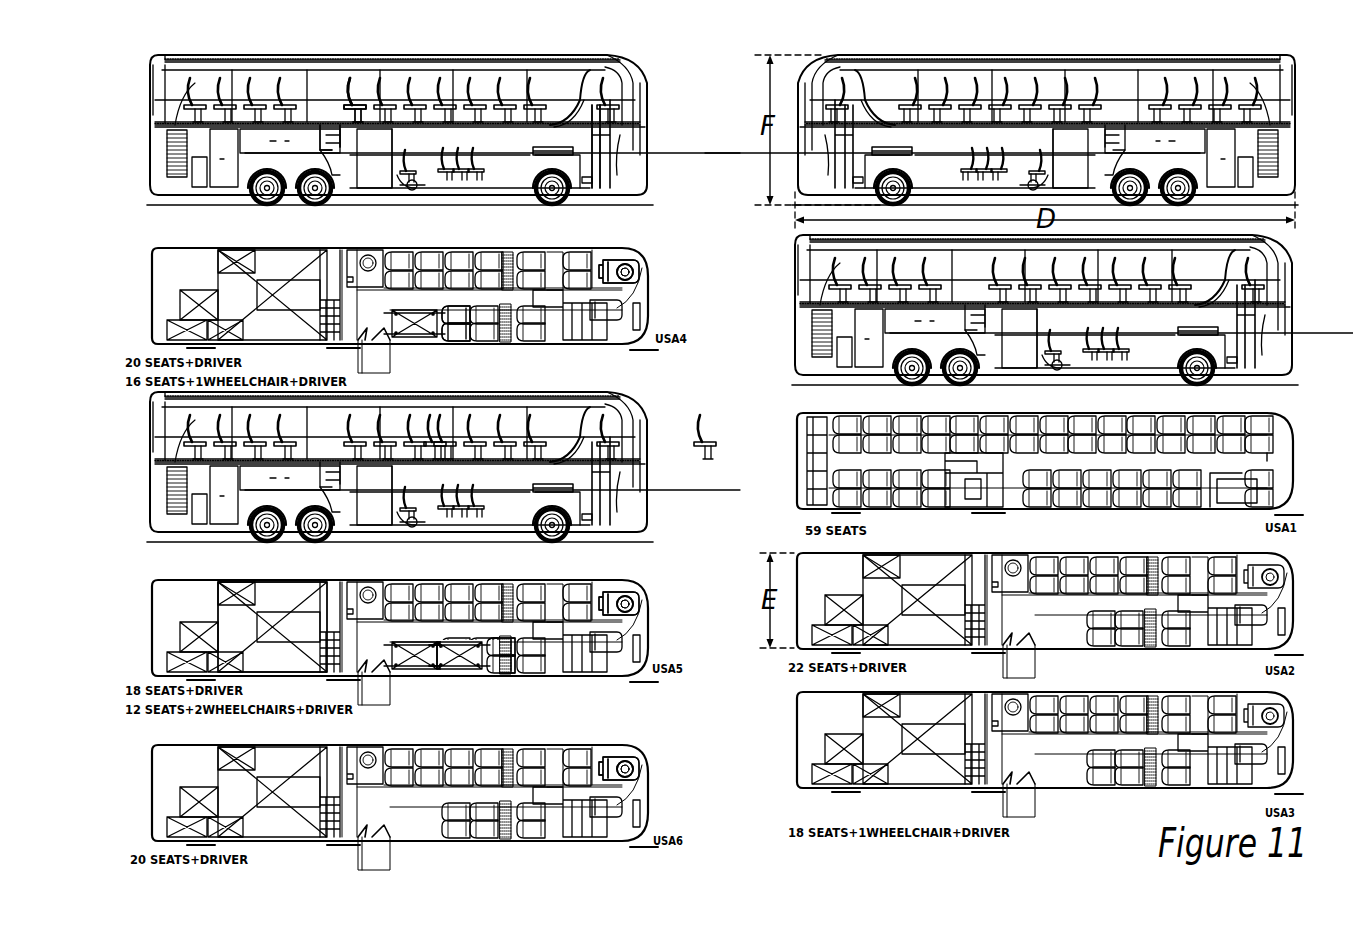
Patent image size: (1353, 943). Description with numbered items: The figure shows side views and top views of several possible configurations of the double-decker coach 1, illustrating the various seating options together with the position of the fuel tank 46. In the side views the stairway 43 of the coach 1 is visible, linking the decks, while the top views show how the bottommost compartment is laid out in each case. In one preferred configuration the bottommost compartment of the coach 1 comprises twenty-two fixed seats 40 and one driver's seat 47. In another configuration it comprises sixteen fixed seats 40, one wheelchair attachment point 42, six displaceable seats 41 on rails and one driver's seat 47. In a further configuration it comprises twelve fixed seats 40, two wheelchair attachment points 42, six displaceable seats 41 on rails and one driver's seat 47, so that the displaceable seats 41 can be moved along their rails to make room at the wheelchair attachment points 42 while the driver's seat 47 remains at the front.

The double-decker coach 1 is at (662, 272).
The fixed seat 40 is at (350, 86).
The displaceable seat on rails 41 is at (462, 340).
The wheelchair attachment point 42 is at (418, 335).
The stairway 43 is at (353, 165).
The fuel tank 46 is at (292, 615).
The driver's seat 47 is at (621, 262).